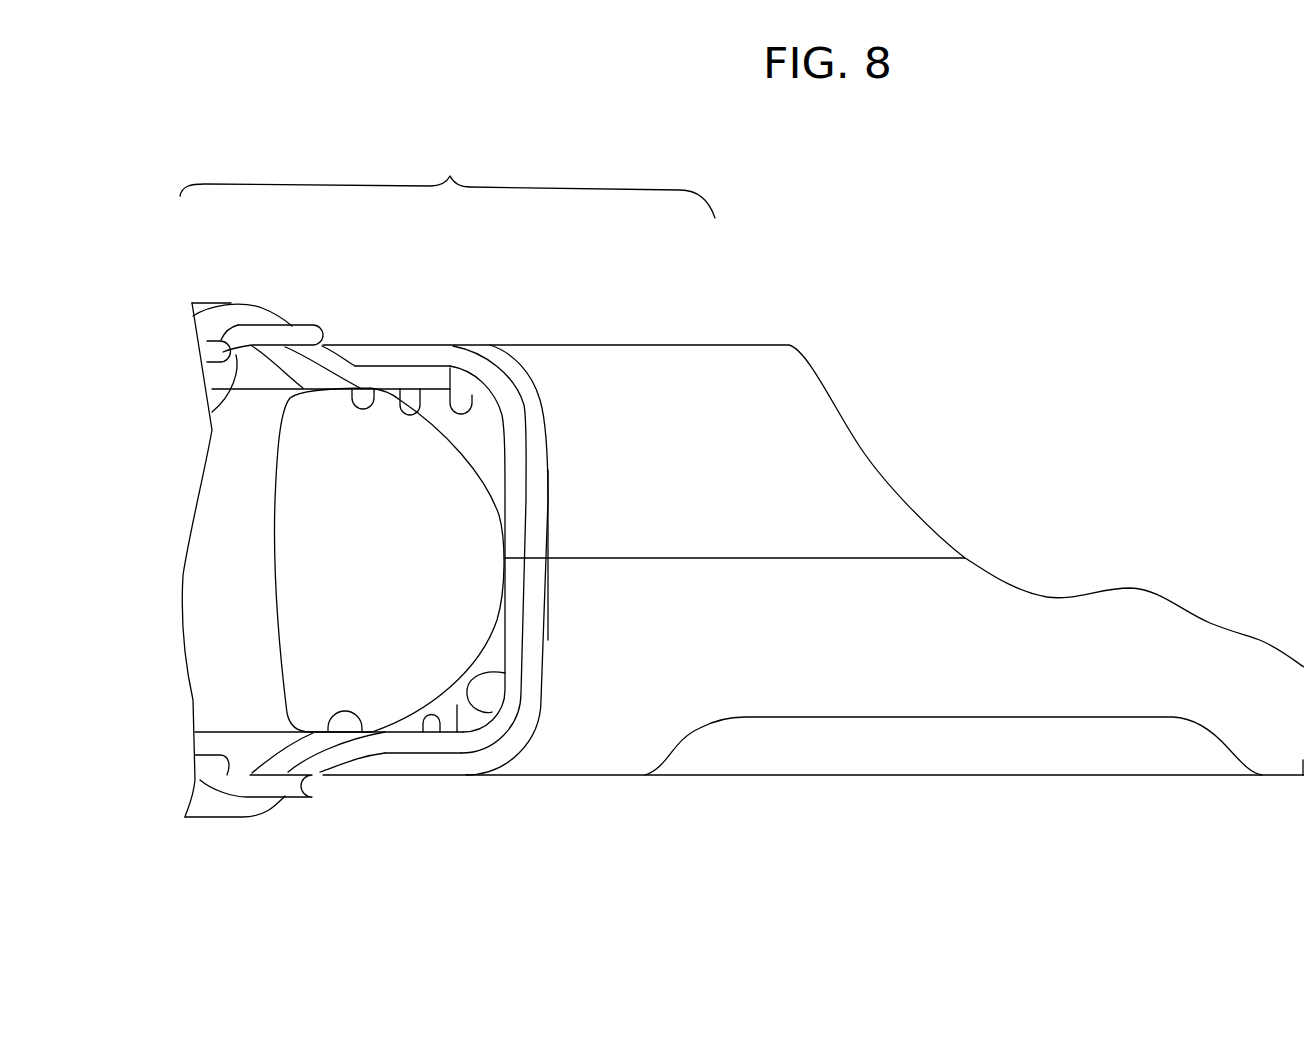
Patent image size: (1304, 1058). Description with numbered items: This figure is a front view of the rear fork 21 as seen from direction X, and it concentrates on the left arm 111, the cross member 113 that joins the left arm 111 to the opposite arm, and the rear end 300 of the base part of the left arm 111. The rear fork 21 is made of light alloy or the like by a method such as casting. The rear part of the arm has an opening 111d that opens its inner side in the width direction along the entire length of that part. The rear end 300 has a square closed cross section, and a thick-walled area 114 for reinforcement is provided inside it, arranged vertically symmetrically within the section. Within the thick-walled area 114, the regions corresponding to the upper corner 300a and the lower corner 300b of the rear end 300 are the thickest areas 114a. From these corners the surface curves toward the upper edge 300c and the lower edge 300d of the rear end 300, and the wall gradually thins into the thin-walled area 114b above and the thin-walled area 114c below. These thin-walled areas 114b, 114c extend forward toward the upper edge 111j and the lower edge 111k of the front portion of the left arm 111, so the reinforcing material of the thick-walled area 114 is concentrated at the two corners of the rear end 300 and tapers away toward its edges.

The rear fork 21 is at (447, 177).
The left arm 111 is at (231, 303).
The opening 111d is at (213, 390).
The upper edge of front portion 111j is at (350, 380).
The lower edge of front portion 111k is at (330, 725).
The cross member 113 is at (675, 345).
The thick-walled area 114 is at (452, 368).
The thickest areas 114a is at (495, 420).
The thin-walled area 114b is at (393, 387).
The thin-walled area 114c is at (388, 735).
The rear end of base part 300 is at (277, 588).
The upper corner 300a is at (478, 395).
The lower corner 300b is at (505, 673).
The upper edge 300c is at (410, 370).
The lower edge 300d is at (419, 735).